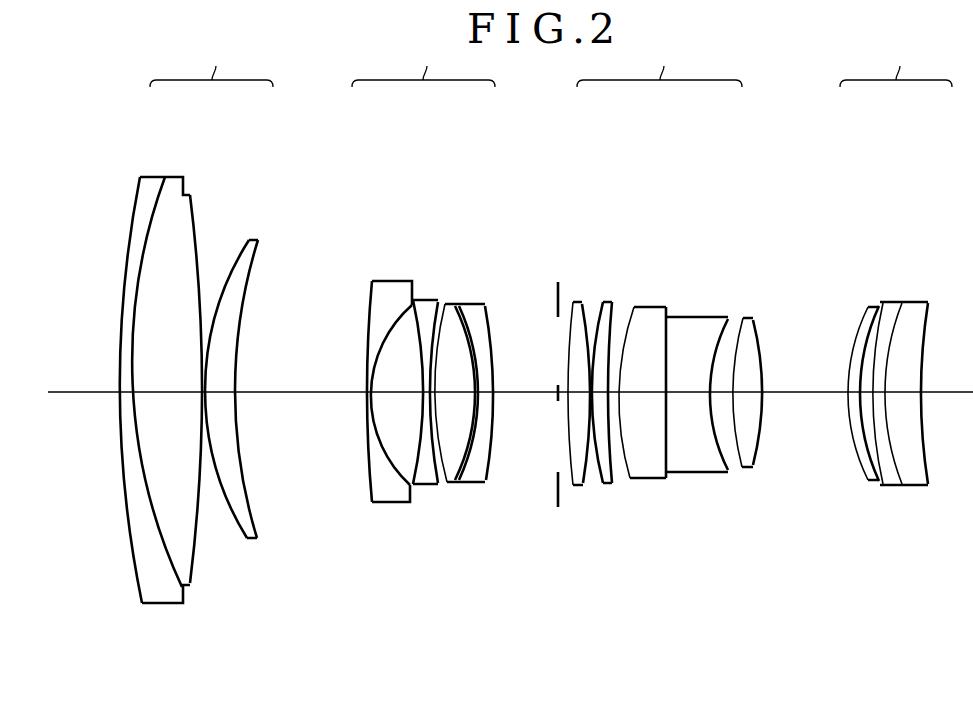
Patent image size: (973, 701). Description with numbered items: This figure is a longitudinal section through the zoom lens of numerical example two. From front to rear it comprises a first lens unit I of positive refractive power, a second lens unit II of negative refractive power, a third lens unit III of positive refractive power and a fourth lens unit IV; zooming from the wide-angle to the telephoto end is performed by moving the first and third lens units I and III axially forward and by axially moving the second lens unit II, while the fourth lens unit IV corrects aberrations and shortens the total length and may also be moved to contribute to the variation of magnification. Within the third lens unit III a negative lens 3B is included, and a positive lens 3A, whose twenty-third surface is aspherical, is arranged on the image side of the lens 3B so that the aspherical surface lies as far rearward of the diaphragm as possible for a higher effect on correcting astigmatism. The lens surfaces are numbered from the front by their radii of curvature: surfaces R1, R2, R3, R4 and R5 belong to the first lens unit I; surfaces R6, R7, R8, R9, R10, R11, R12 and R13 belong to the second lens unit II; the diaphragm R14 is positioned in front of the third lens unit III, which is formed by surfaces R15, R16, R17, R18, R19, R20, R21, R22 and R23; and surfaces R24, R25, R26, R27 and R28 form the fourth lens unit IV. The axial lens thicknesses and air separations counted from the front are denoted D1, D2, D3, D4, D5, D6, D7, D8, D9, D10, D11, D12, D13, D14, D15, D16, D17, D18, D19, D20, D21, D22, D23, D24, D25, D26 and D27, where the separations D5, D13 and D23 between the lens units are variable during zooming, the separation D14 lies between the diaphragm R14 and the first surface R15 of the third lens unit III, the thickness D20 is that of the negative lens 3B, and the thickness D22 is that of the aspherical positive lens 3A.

The first lens unit I is at (196, 356).
The second lens unit II is at (435, 321).
The third lens unit III is at (648, 352).
The fourth lens unit IV is at (871, 321).
The lens of positive refractive power 3A is at (730, 378).
The negative lens 3B is at (690, 378).
The first lens surface R1 is at (134, 205).
The second lens surface R2 is at (160, 207).
The third lens surface R3 is at (198, 204).
The fourth lens surface R4 is at (249, 240).
The fifth lens surface R5 is at (258, 262).
The sixth lens surface R6 is at (369, 303).
The seventh lens surface R7 is at (385, 282).
The eighth lens surface R8 is at (413, 304).
The ninth lens surface R9 is at (436, 303).
The tenth lens surface R10 is at (447, 305).
The eleventh lens surface R11 is at (456, 308).
The twelfth lens surface R12 is at (461, 306).
The thirteenth lens surface R13 is at (486, 306).
The diaphragm R14 is at (556, 300).
The fifteenth lens surface R15 is at (573, 302).
The sixteenth lens surface R16 is at (583, 305).
The seventeenth lens surface R17 is at (605, 302).
The eighteenth lens surface R18 is at (612, 302).
The nineteenth lens surface R19 is at (635, 307).
The twentieth lens surface R20 is at (665, 338).
The twenty-first lens surface R21 is at (717, 347).
The twenty-second lens surface R22 is at (743, 318).
The twenty-third lens surface R23 is at (757, 325).
The twenty-fourth lens surface R24 is at (863, 320).
The twenty-fifth lens surface R25 is at (880, 303).
The twenty-sixth lens surface R26 is at (884, 333).
The twenty-seventh lens surface R27 is at (897, 330).
The twenty-eighth lens surface R28 is at (928, 325).
The first lens thickness D1 is at (127, 395).
The second lens thickness D2 is at (163, 395).
The third air separation D3 is at (185, 395).
The fourth lens thickness D4 is at (220, 395).
The fifth air separation D5 is at (273, 395).
The sixth lens thickness D6 is at (363, 398).
The seventh air separation D7 is at (383, 398).
The eighth lens thickness D8 is at (408, 398).
The ninth air separation D9 is at (425, 398).
The tenth lens thickness D10 is at (437, 398).
The eleventh air separation D11 is at (466, 398).
The twelfth lens thickness D12 is at (477, 398).
The thirteenth air separation D13 is at (486, 398).
The fourteenth air separation D14 is at (505, 398).
The fifteenth lens thickness D15 is at (564, 398).
The sixteenth air separation D16 is at (591, 398).
The seventeenth lens thickness D17 is at (600, 398).
The eighteenth air separation D18 is at (614, 398).
The nineteenth lens thickness D19 is at (641, 398).
The twentieth lens thickness D20 is at (685, 398).
The twenty-first air separation D21 is at (713, 398).
The twenty-second lens thickness D22 is at (748, 398).
The twenty-third air separation D23 is at (797, 398).
The twenty-fourth lens thickness D24 is at (856, 398).
The twenty-fifth air separation D25 is at (868, 398).
The twenty-sixth lens thickness D26 is at (881, 398).
The twenty-seventh lens thickness D27 is at (907, 398).